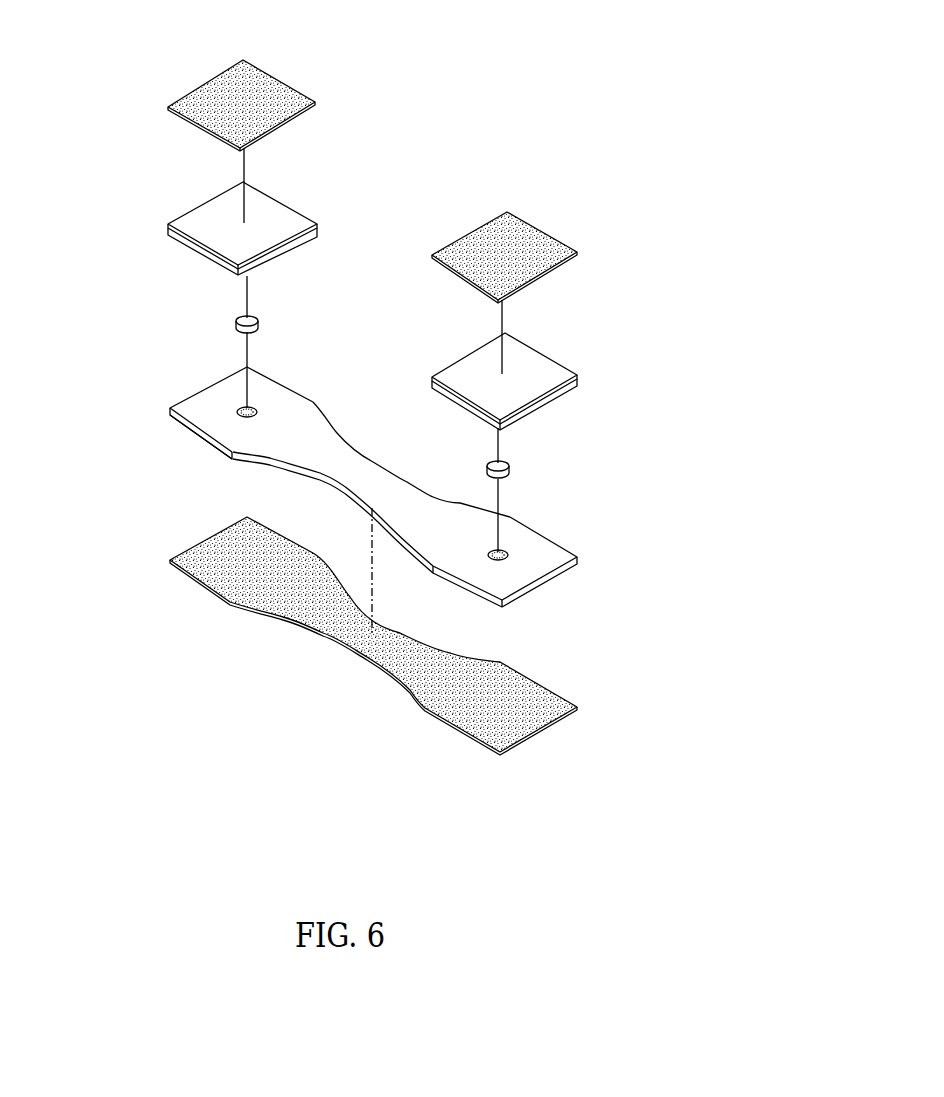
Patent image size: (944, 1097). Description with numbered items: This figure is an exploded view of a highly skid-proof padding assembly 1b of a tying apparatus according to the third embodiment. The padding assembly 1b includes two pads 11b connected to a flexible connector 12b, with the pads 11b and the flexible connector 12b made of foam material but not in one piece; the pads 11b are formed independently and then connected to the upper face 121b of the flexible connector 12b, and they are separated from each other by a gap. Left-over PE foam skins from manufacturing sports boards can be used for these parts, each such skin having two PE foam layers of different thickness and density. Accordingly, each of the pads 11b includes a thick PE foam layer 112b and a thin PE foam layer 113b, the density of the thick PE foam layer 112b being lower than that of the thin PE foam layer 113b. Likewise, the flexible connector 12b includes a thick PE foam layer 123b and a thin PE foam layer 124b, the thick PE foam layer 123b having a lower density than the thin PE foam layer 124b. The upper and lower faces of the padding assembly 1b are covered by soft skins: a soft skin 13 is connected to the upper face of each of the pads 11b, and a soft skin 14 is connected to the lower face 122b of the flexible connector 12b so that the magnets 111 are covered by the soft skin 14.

The padding assembly 1b is at (240, 627).
The pad 11b is at (183, 207).
The magnet 111 is at (236, 324).
The thick PE foam layer 112b is at (283, 243).
The thin PE foam layer 113b is at (298, 217).
The flexible connector 12b is at (172, 383).
The upper face 121b is at (340, 447).
The lower face 122b is at (413, 553).
The thick PE foam layer 123b is at (177, 425).
The thin PE foam layer 124b is at (212, 440).
The soft skin 13 is at (278, 90).
The soft skin 14 is at (540, 733).